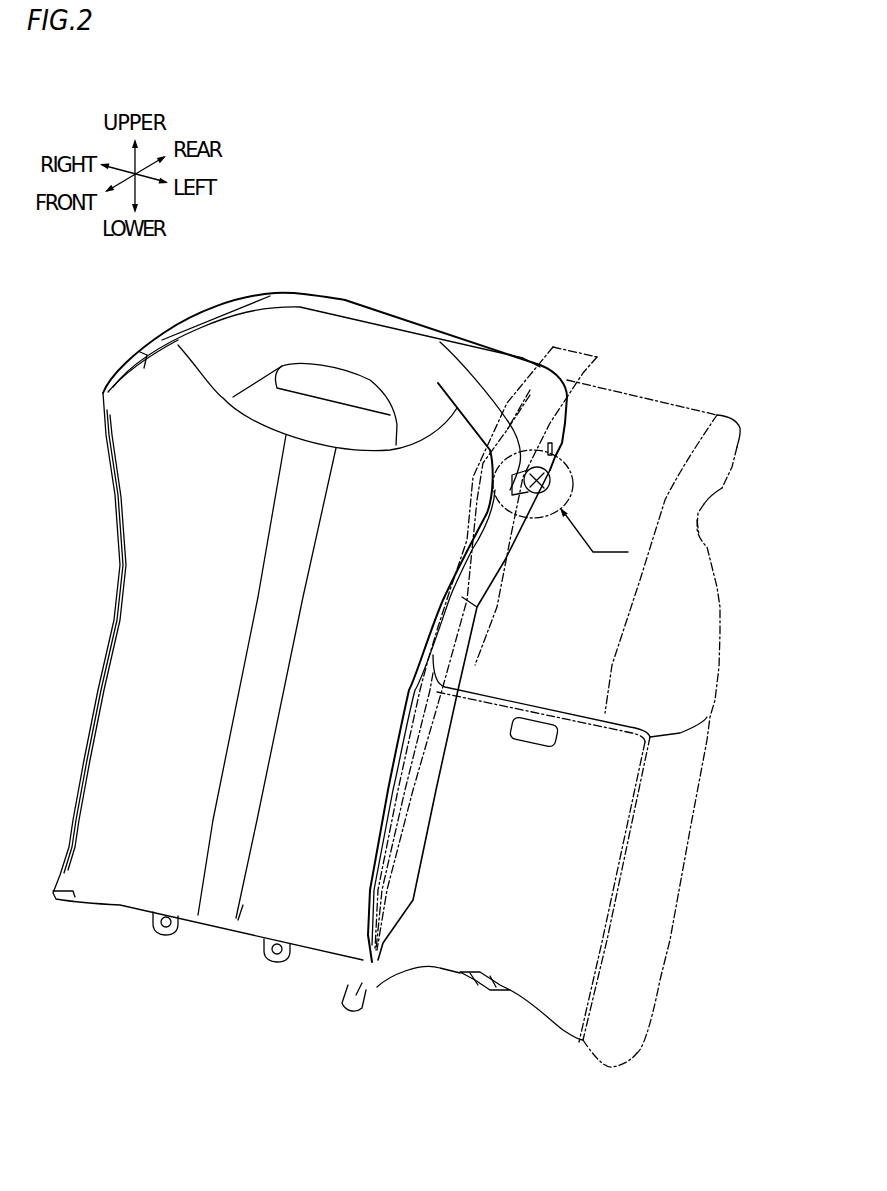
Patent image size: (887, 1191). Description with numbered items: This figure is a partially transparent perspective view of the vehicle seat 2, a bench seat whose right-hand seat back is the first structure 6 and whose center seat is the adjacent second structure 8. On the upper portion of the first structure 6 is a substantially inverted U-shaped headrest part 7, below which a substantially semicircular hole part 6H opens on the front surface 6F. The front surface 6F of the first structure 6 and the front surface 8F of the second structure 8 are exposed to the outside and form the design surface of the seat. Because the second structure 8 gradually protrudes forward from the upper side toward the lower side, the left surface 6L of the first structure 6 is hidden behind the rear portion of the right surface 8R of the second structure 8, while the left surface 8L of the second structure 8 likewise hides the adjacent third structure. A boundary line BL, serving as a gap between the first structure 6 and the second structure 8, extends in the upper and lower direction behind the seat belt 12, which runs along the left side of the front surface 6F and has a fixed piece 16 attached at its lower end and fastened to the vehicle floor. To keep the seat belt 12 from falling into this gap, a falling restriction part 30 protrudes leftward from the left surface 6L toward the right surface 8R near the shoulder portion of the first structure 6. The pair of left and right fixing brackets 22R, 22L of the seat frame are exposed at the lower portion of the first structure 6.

The vehicle seat 2 is at (476, 229).
The first structure 6 is at (118, 570).
The headrest part 7 is at (236, 348).
The hole part 6H is at (313, 413).
The front surface of the first structure 6F is at (286, 644).
The left surface of the first structure 6L is at (540, 430).
The boundary line BL is at (543, 402).
The seat belt 12 is at (573, 357).
The falling restriction part 30 is at (553, 474).
The second structure 8 is at (719, 631).
The right surface of the second structure 8R is at (488, 604).
The left surface of the second structure 8L is at (698, 593).
The front surface of the second structure 8F is at (572, 644).
The right fixing bracket 22R is at (165, 940).
The left fixing bracket 22L is at (276, 965).
The fixed piece 16 is at (343, 1012).